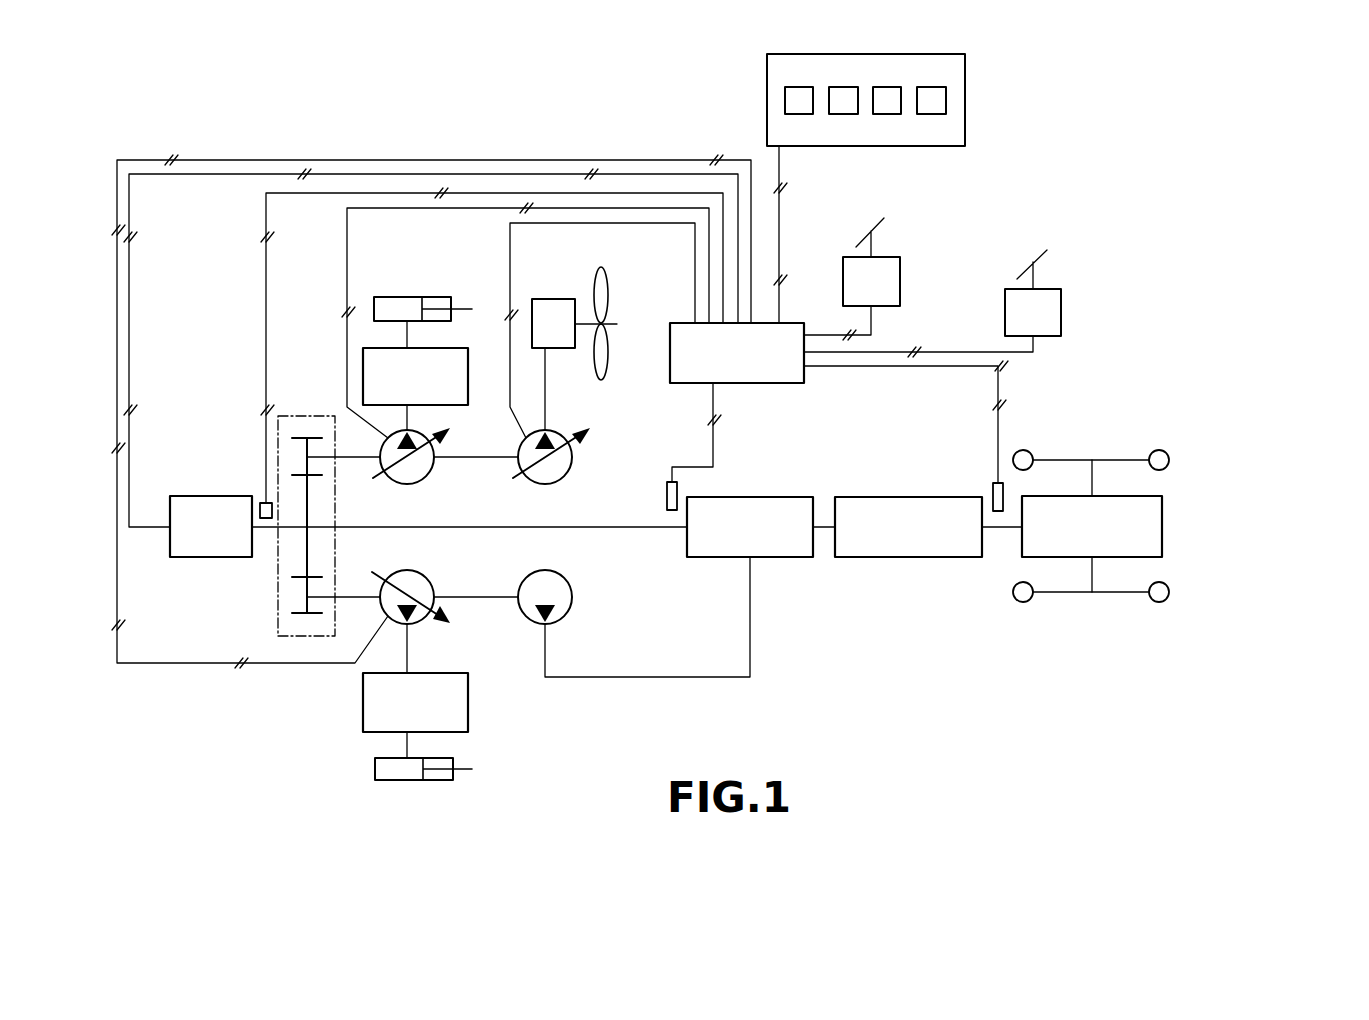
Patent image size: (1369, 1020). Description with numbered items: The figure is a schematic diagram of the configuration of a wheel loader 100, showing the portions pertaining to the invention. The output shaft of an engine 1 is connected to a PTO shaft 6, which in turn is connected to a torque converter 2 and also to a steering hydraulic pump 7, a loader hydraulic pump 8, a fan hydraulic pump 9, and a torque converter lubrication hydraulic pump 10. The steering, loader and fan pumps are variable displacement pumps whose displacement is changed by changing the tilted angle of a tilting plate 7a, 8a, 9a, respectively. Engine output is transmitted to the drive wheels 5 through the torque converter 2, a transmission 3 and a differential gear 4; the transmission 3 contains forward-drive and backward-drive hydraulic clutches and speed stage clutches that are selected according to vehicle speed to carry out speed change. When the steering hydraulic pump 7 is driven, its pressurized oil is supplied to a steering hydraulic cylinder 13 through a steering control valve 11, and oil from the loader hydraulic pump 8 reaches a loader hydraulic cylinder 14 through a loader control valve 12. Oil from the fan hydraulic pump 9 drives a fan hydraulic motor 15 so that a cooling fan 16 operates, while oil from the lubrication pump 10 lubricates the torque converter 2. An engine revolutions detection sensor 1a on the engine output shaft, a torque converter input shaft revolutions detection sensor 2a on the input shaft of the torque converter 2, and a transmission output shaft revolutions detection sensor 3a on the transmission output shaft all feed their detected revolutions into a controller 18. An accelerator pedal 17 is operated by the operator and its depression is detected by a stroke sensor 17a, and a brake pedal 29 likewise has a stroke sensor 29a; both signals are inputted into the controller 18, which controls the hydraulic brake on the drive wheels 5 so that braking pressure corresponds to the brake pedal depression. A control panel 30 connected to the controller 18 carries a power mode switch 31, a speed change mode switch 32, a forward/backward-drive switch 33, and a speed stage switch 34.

The engine 1 is at (210, 560).
The engine revolutions detection sensor 1a is at (263, 502).
The torque converter 2 is at (787, 560).
The torque converter input shaft revolutions detection sensor 2a is at (680, 491).
The transmission 3 is at (890, 560).
The transmission output shaft revolutions detection sensor 3a is at (993, 484).
The differential gear 4 is at (1162, 527).
The drive wheels 5 is at (1169, 460).
The PTO shaft 6 is at (301, 413).
The steering hydraulic pump 7 is at (396, 486).
The tilting plate 7a is at (444, 430).
The loader hydraulic pump 8 is at (396, 577).
The tilting plate 8a is at (445, 626).
The fan hydraulic pump 9 is at (572, 462).
The tilting plate 9a is at (568, 432).
The torque converter lubrication hydraulic pump 10 is at (570, 594).
The steering control valve 11 is at (440, 348).
The loader control valve 12 is at (363, 703).
The steering hydraulic cylinder 13 is at (380, 297).
The loader hydraulic cylinder 14 is at (375, 770).
The fan hydraulic motor 15 is at (549, 298).
The cooling fan 16 is at (610, 282).
The accelerator pedal 17 is at (880, 214).
The stroke sensor 17a is at (900, 290).
The controller 18 is at (767, 388).
The brake pedal 29 is at (1043, 246).
The stroke sensor 29a is at (1061, 330).
The control panel 30 is at (927, 117).
The power mode switch 31 is at (785, 102).
The speed change mode switch 32 is at (846, 114).
The forward/backward-drive switch 33 is at (946, 98).
The speed stage switch 34 is at (887, 114).
The wheel loader 100 is at (710, 423).